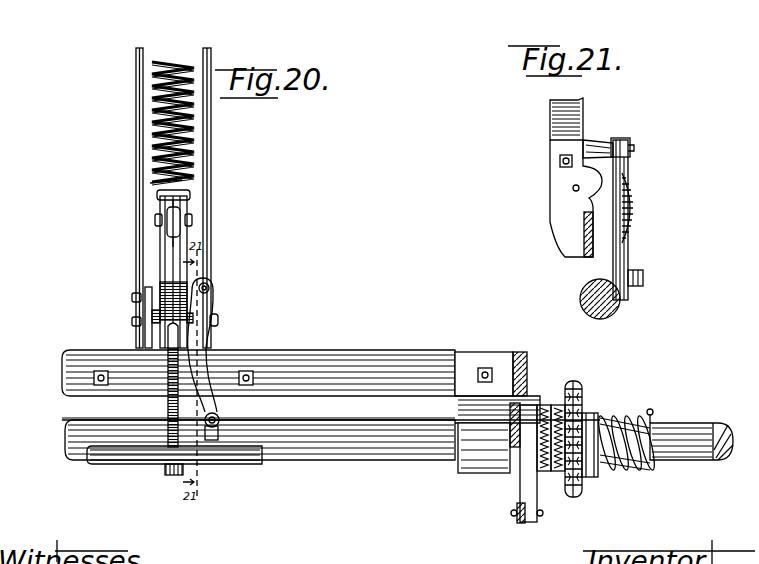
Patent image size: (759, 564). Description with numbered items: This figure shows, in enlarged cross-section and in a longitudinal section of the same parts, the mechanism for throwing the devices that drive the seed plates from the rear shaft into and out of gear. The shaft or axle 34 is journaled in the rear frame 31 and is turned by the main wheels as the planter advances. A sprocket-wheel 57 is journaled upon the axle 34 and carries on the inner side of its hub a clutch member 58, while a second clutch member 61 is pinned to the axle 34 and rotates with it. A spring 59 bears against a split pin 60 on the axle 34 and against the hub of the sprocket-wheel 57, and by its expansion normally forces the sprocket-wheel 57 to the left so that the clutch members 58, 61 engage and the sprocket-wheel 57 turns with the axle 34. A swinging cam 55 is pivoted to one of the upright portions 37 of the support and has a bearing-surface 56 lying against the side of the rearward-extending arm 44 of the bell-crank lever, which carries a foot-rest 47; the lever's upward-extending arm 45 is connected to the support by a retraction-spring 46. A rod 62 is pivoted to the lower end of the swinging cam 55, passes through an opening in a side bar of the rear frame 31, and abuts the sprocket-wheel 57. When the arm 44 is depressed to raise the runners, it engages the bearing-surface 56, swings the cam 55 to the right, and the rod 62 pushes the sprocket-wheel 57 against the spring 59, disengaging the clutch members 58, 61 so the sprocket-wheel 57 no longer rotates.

In FIG. 20, the rear frame 31 is at (485, 368).
In FIG. 20, the shaft or axle 34 is at (386, 460).
In FIG. 21, the shaft or axle 34 is at (586, 300).
In FIG. 20, the upright portion 37 is at (205, 258).
In FIG. 20, the rearward-extending arm 44 is at (166, 386).
In FIG. 20, the upward-extending arm 45 is at (176, 246).
In FIG. 20, the retraction-spring 46 is at (188, 147).
In FIG. 20, the foot-rest 47 is at (153, 456).
In FIG. 20, the swinging cam 55 is at (207, 350).
In FIG. 21, the swinging cam 55 is at (705, 240).
In FIG. 20, the bearing-surface 56 is at (211, 318).
In FIG. 21, the bearing-surface 56 is at (634, 222).
In FIG. 20, the sprocket-wheel 57 is at (578, 393).
In FIG. 20, the clutch member 58 is at (556, 403).
In FIG. 20, the spring 59 is at (632, 417).
In FIG. 20, the split pin 60 is at (654, 413).
In FIG. 20, the clutch member 61 is at (542, 402).
In FIG. 20, the rod 62 is at (350, 423).
In FIG. 21, the rod 62 is at (641, 283).